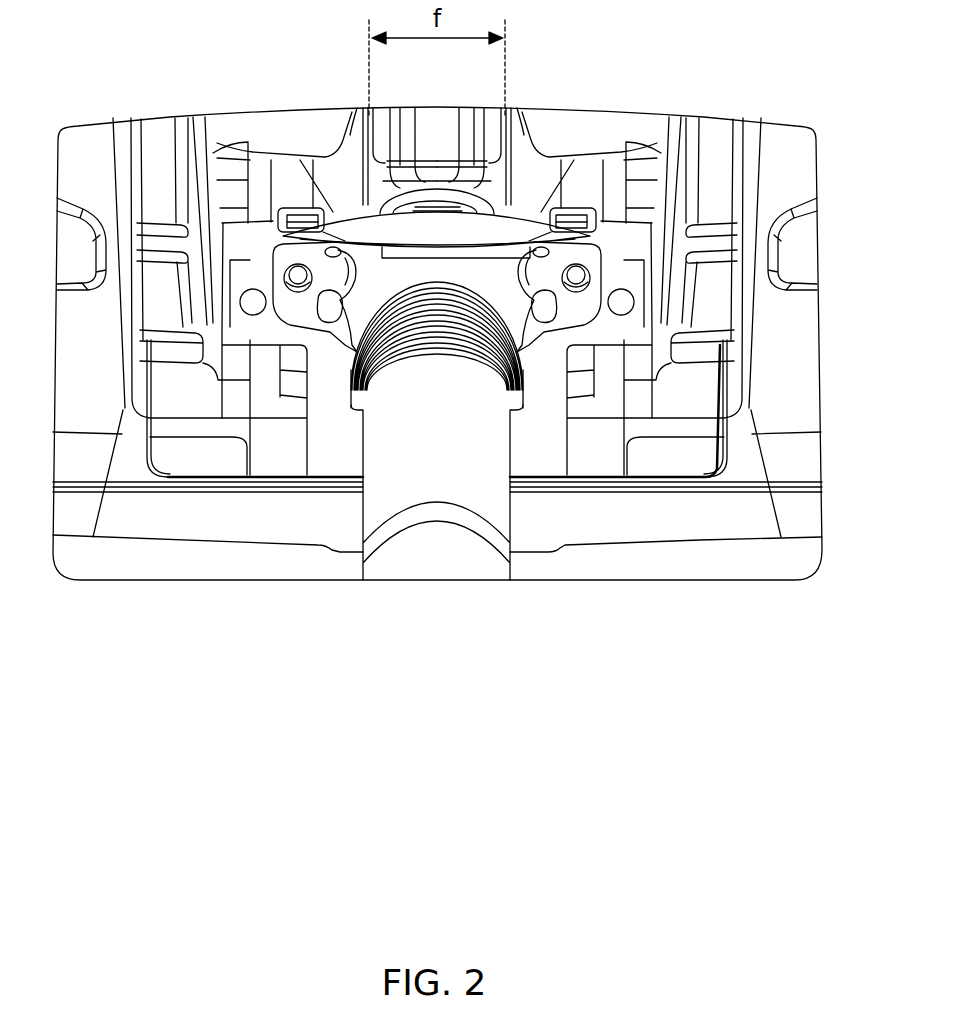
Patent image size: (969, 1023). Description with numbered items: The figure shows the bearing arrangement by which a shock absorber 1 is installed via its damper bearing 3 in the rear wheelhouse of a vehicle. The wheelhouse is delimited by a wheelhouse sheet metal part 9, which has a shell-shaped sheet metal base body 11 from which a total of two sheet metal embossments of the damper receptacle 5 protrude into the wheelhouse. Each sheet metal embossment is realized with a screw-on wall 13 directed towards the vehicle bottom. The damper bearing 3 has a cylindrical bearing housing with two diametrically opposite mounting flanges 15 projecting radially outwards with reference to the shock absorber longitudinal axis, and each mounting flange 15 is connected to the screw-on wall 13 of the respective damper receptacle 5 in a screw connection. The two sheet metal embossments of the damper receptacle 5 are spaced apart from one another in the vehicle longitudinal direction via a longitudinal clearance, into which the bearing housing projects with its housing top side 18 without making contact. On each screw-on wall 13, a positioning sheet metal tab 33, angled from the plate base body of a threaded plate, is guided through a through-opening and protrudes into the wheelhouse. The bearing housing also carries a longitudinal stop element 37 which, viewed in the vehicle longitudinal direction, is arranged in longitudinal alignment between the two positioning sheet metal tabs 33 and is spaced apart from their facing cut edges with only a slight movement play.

The shock absorber 1 is at (466, 560).
The damper bearing 3 is at (393, 275).
The damper receptacle 5 is at (705, 406).
The wheelhouse sheet metal part 9 is at (867, 444).
The sheet metal base body 11 is at (798, 513).
The screw-on wall 13 is at (619, 262).
The mounting flange 15 is at (576, 304).
The housing top side 18 is at (431, 197).
The positioning sheet metal tab 33 is at (574, 222).
The longitudinal stop element 37 is at (487, 230).